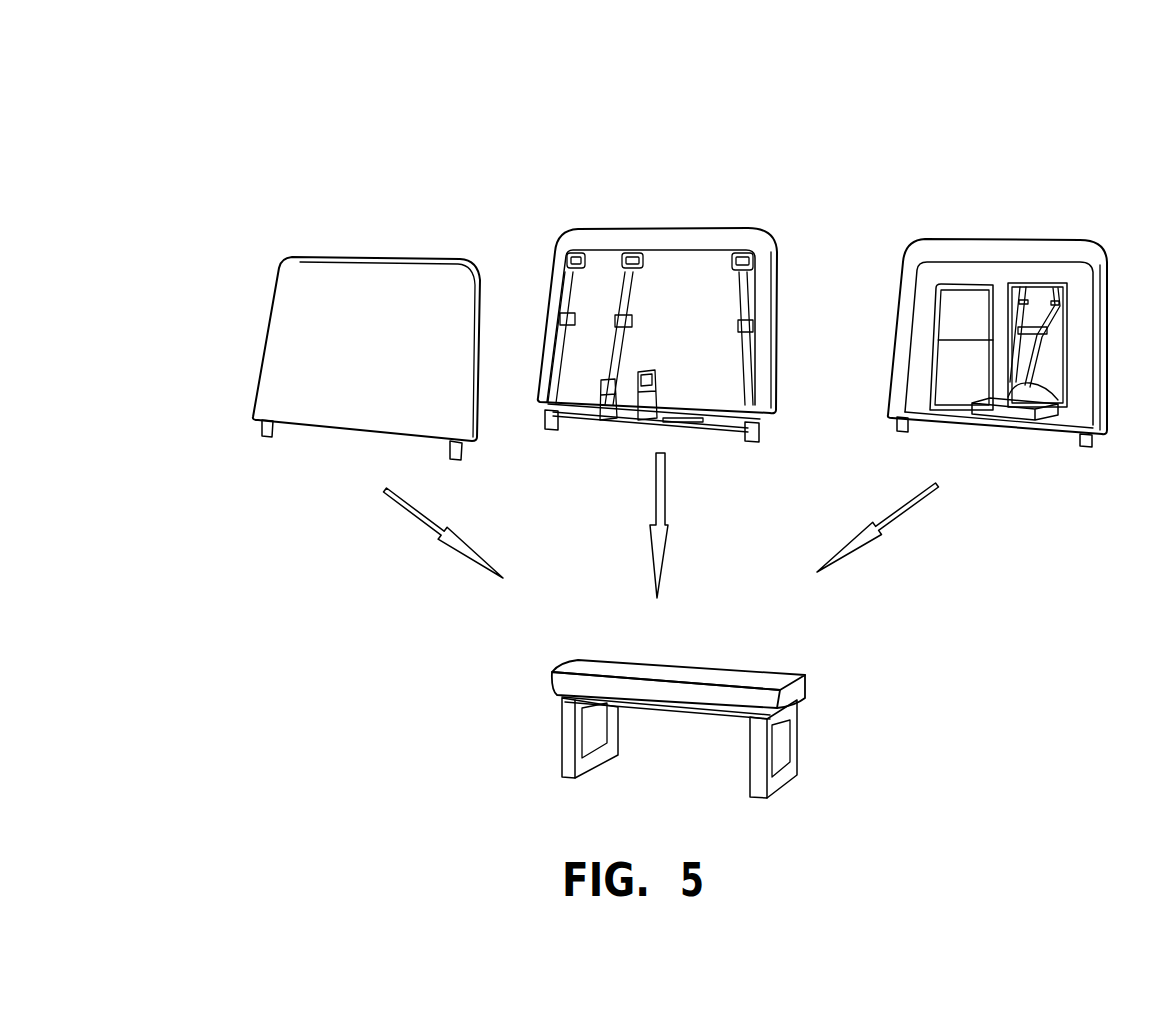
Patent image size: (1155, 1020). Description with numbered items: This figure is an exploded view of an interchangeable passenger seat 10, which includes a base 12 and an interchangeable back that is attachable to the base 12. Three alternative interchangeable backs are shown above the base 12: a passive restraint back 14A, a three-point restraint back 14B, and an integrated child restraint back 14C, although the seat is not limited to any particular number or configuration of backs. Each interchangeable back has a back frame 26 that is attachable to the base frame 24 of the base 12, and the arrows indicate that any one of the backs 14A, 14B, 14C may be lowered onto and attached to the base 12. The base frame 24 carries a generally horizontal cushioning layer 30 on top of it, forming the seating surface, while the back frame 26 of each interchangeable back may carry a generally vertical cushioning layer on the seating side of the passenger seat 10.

The interchangeable passenger seat 10 is at (447, 169).
The base 12 is at (700, 709).
The passive restraint back 14A is at (323, 257).
The three-point restraint back 14B is at (687, 225).
The integrated child restraint back 14C is at (998, 238).
The base frame 24 is at (803, 743).
The back frame 26 is at (269, 438).
The horizontal cushioning layer 30 is at (793, 688).